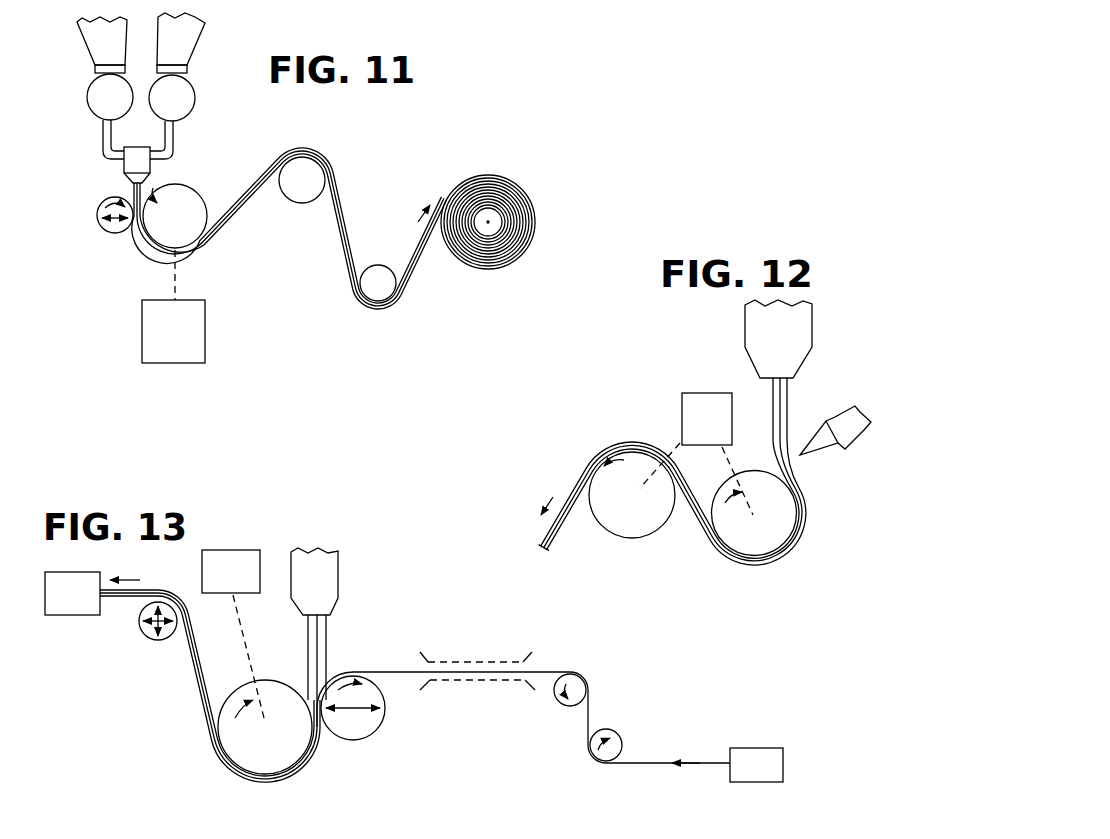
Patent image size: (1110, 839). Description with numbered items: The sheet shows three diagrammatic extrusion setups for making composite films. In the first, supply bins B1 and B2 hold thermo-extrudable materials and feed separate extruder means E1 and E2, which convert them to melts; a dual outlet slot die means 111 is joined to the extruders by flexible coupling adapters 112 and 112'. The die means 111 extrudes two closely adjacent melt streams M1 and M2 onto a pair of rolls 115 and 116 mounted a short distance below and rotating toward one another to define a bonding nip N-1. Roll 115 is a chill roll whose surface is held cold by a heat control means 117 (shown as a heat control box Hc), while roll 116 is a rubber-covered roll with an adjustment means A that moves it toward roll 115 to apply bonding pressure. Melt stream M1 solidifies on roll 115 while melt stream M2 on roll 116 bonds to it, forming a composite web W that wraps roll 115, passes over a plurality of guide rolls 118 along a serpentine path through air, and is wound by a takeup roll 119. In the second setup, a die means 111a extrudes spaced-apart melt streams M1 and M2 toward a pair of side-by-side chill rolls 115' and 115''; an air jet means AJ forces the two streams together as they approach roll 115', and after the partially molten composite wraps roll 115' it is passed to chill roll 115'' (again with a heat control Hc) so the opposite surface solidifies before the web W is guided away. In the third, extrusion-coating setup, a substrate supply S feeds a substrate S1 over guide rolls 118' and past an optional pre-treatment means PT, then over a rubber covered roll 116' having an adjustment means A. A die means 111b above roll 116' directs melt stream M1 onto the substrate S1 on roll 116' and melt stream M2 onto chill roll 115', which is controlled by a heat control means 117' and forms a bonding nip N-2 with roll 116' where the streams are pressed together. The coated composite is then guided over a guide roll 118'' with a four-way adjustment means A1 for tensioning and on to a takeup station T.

In FIG. 11, the dual outlet slot die means 111 is at (156, 172).
In FIG. 12, the die means 111a is at (814, 350).
In FIG. 13, the die means 111b is at (330, 582).
In FIG. 11, the flexible coupling adapter 112 is at (187, 142).
In FIG. 11, the flexible coupling adapter 112' is at (77, 141).
In FIG. 11, the roll 115 is at (211, 219).
In FIG. 12, the chill roll 115' is at (790, 523).
In FIG. 13, the chill roll 115' is at (265, 748).
In FIG. 12, the chill roll 115'' is at (632, 515).
In FIG. 11, the roll 116 is at (100, 232).
In FIG. 13, the rubber covered roll 116' is at (386, 709).
In FIG. 11, the heat control means 117 is at (208, 306).
In FIG. 13, the heat controller 117' is at (197, 636).
In FIG. 11, the guide rolls 118 is at (357, 227).
In FIG. 13, the guide rolls 118' is at (613, 714).
In FIG. 13, the guide roll 118'' is at (155, 649).
In FIG. 11, the takeup roll 119 is at (495, 226).
In FIG. 11, the supply bin B1 is at (188, 40).
In FIG. 11, the supply bin B2 is at (88, 38).
In FIG. 11, the extruder means E1 is at (186, 106).
In FIG. 11, the extruder means E2 is at (98, 102).
In FIG. 11, the melt stream M1 is at (148, 186).
In FIG. 12, the melt stream M1 is at (788, 413).
In FIG. 13, the melt stream M1 is at (328, 656).
In FIG. 11, the melt stream M2 is at (133, 196).
In FIG. 12, the melt stream M2 is at (772, 408).
In FIG. 13, the melt stream M2 is at (308, 650).
In FIG. 11, the composite web W is at (352, 228).
In FIG. 12, the composite web W is at (563, 527).
In FIG. 13, the composite web W is at (415, 686).
In FIG. 11, the adjustment means A is at (104, 232).
In FIG. 13, the adjustment means A is at (358, 719).
In FIG. 13, the four-way adjustment means A1 is at (148, 630).
In FIG. 12, the air jet means AJ is at (858, 441).
In FIG. 11, the bonding nip N-1 is at (133, 242).
In FIG. 13, the bonding nip N-2 is at (322, 742).
In FIG. 12, the heat controller Hc is at (696, 454).
In FIG. 13, the takeup station T is at (92, 593).
In FIG. 13, the substrate supply S is at (756, 765).
In FIG. 13, the substrate S1 is at (200, 700).
In FIG. 13, the pre-treatment means PT is at (459, 664).